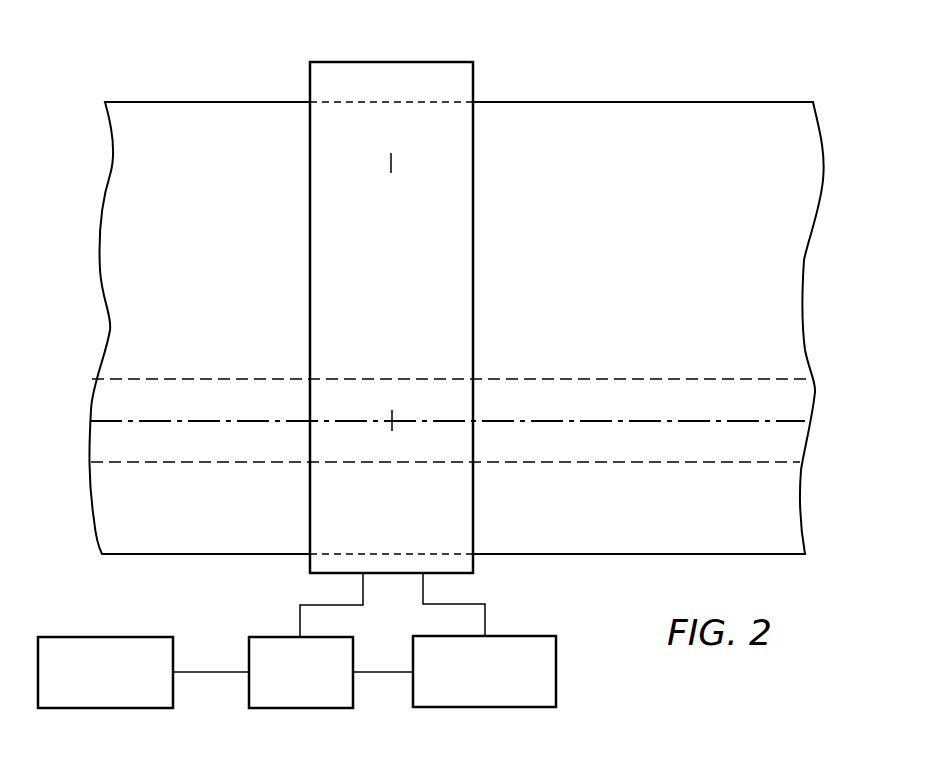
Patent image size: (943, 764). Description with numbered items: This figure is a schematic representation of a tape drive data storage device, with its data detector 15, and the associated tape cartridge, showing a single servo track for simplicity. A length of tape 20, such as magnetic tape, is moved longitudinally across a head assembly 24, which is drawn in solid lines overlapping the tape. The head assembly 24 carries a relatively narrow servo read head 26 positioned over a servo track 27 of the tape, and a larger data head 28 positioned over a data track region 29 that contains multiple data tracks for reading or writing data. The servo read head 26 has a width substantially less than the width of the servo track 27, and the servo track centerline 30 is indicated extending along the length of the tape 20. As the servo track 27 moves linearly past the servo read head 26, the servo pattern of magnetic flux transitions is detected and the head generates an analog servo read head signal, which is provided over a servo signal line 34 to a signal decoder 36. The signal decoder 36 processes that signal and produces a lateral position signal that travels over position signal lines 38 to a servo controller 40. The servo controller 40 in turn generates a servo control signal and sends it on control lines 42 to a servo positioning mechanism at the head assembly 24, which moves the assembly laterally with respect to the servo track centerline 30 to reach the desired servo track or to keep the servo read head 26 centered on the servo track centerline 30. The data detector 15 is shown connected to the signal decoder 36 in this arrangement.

The data detector 15 is at (105, 637).
The tape 20 is at (178, 102).
The head assembly 24 is at (363, 62).
The servo read head 26 is at (390, 413).
The servo track 27 is at (617, 380).
The data head 28 is at (390, 162).
The data track region 29 is at (683, 207).
The servo track centerline 30 is at (803, 421).
The servo signal line 34 is at (300, 620).
The signal decoder 36 is at (249, 688).
The position signal lines 38 is at (380, 674).
The servo controller 40 is at (556, 672).
The control lines 42 is at (485, 620).